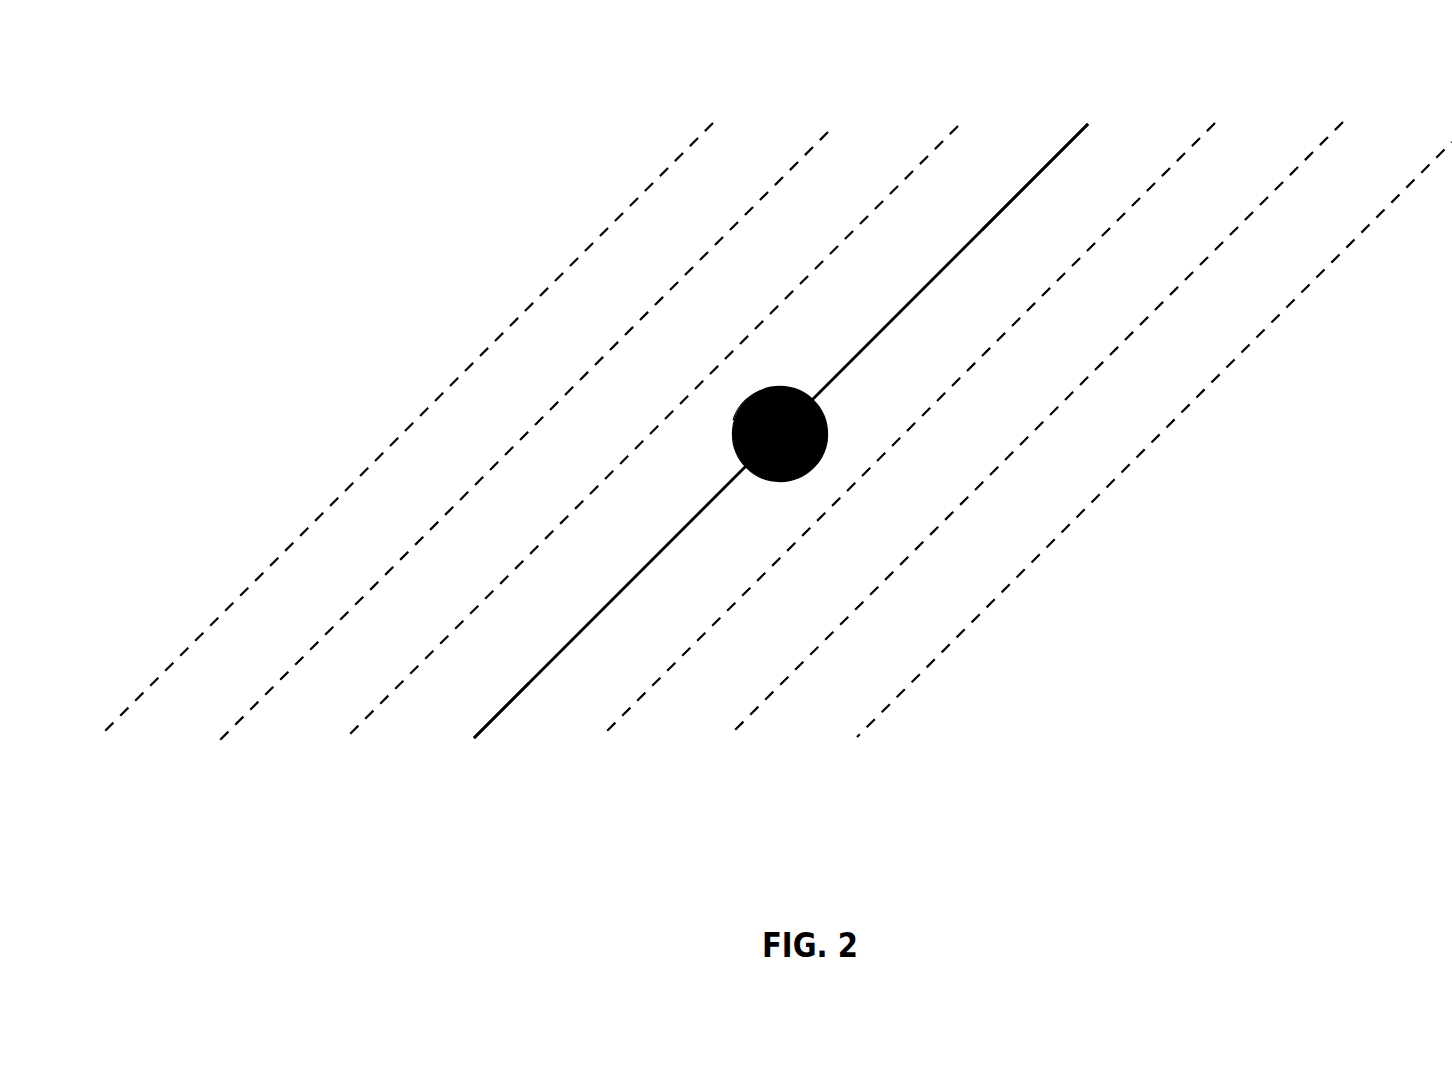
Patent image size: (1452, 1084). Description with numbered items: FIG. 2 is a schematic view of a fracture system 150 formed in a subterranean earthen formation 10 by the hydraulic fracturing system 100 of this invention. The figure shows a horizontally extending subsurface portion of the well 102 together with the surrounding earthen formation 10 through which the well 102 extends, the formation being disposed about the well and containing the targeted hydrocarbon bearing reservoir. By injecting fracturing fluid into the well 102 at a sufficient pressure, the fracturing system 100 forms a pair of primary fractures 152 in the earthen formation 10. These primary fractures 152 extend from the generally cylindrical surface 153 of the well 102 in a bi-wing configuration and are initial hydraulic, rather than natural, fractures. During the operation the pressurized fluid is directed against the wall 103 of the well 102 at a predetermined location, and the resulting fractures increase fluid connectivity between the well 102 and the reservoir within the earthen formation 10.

The hydraulic fracturing system 100 is at (348, 86).
The earthen formation 10 is at (701, 331).
The conductive line 150 is at (872, 338).
The primary fractures 152 is at (982, 231).
The well 102 is at (740, 455).
The cylindrical surface 153 is at (737, 413).
The wall 103 is at (828, 434).